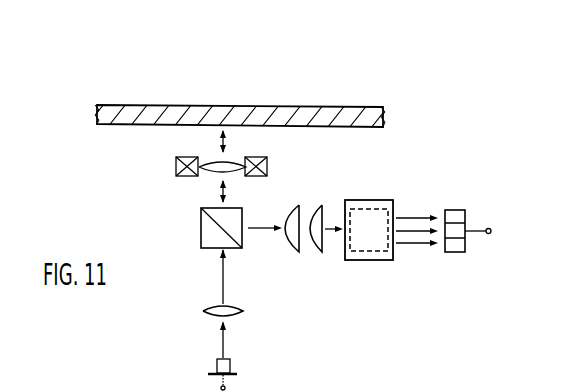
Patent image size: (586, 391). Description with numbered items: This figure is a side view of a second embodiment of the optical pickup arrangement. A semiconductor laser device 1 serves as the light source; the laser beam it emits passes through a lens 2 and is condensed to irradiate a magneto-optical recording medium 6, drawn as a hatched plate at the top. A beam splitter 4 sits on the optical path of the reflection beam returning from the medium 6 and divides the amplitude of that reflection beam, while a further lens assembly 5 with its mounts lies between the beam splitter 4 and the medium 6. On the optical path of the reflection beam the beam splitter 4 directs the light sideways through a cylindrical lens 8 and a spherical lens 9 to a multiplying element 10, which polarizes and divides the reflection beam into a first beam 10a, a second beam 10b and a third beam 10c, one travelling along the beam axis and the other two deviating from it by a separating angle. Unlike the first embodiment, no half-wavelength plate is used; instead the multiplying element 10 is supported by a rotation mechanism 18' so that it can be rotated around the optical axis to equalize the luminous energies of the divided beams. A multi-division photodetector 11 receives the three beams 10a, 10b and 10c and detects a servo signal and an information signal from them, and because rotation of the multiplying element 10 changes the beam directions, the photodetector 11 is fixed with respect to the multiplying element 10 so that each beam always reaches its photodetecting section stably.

The semiconductor laser device 1 is at (217, 366).
The lens 2 is at (203, 311).
The beam splitter 4 is at (201, 232).
The lens with mounting 5 is at (176, 164).
The magneto-optical recording medium 6 is at (380, 112).
The cylindrical lens 8 is at (296, 206).
The spherical lens 9 is at (320, 206).
The multiplying element 10 is at (362, 209).
The first beam 10a is at (407, 233).
The second beam 10b is at (410, 217).
The third beam 10c is at (422, 245).
The multi-division photodetector 11 is at (464, 211).
The rotation mechanism 18' is at (360, 275).